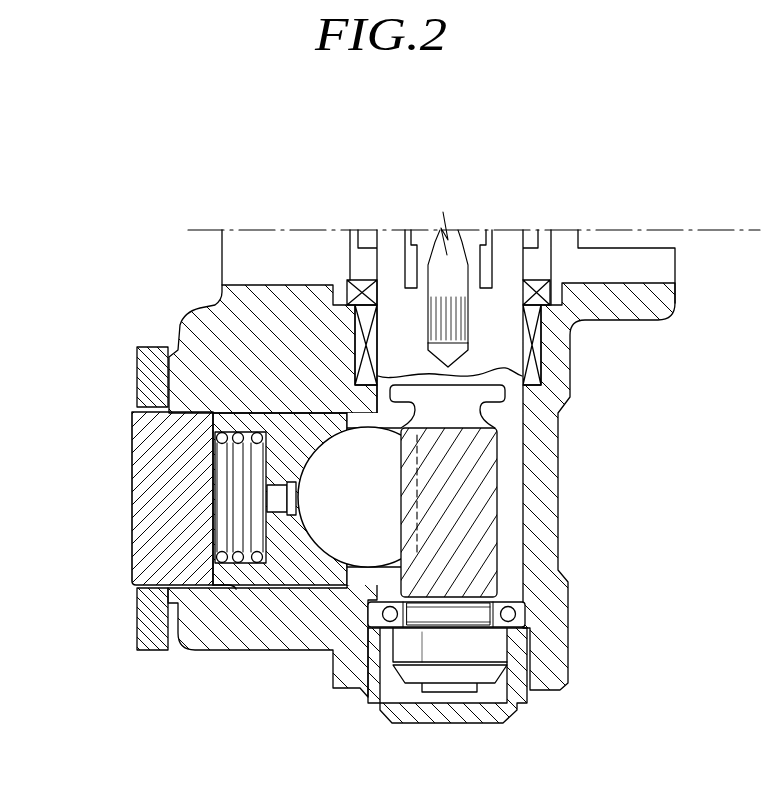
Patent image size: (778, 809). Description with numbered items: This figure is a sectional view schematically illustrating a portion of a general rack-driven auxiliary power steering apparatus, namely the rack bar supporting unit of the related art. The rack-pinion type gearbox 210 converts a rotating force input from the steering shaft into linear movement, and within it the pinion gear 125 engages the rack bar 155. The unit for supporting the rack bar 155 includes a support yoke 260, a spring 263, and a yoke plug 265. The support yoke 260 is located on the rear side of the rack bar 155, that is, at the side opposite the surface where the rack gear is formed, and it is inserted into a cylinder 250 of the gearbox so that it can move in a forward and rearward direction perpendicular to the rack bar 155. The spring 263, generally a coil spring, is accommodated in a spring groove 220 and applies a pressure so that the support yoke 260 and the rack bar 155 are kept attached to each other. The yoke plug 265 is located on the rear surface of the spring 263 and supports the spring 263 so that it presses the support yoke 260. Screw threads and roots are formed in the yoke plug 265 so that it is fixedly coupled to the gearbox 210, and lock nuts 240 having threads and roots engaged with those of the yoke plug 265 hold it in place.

The pinion gear 125 is at (483, 495).
The rack bar 155 is at (373, 522).
The rack-pinion type gearbox 210 is at (195, 322).
The spring groove 220 is at (245, 560).
The lock nuts 240 is at (137, 618).
The cylinder 250 is at (290, 560).
The support yoke 260 is at (308, 428).
The spring 263 is at (230, 414).
The yoke plug 265 is at (147, 482).